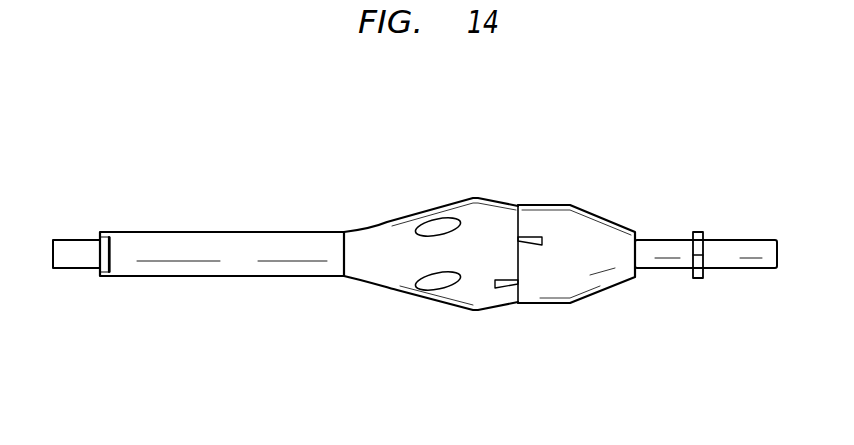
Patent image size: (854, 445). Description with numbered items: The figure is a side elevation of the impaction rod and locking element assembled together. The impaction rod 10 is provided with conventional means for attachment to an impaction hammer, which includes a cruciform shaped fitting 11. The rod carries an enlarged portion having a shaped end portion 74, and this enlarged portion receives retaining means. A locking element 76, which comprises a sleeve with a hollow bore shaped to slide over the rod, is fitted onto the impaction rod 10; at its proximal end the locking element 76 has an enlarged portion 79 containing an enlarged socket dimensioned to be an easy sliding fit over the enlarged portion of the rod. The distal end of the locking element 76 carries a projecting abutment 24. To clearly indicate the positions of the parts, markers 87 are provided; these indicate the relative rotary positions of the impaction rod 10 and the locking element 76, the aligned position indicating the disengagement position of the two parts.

The impaction rod 10 is at (660, 258).
The cruciform shaped fitting 11 is at (697, 232).
The projecting abutment 24 is at (103, 253).
The shaped end portion 74 is at (597, 235).
The locking element 76 is at (301, 278).
The enlarged portion 79 is at (388, 220).
The markers 87 is at (530, 237).